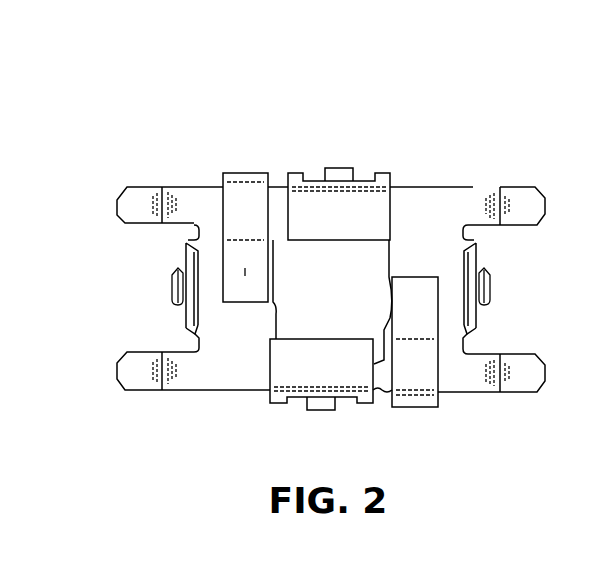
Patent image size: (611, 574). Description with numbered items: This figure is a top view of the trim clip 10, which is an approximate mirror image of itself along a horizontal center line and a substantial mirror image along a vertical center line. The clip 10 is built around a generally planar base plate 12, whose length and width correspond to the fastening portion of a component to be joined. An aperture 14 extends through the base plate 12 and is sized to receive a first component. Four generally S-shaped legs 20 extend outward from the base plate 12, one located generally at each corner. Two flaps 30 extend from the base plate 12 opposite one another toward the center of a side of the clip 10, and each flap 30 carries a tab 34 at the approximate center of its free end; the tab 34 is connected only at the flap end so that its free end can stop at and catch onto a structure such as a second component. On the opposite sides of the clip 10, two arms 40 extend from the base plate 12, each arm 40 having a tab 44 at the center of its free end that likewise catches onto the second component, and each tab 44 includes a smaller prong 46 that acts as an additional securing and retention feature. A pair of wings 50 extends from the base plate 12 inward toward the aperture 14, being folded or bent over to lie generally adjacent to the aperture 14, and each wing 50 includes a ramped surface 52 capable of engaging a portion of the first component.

The trim clip 10 is at (455, 66).
The base plate 12 is at (225, 365).
The aperture 14 is at (360, 297).
The leg 20 is at (133, 203).
The flap 30 is at (363, 210).
The tab 34 is at (342, 175).
The arm 40 is at (187, 257).
The tab 44 is at (182, 312).
The prong 46 is at (172, 293).
The wing 50 is at (245, 200).
The ramped surface 52 is at (247, 272).